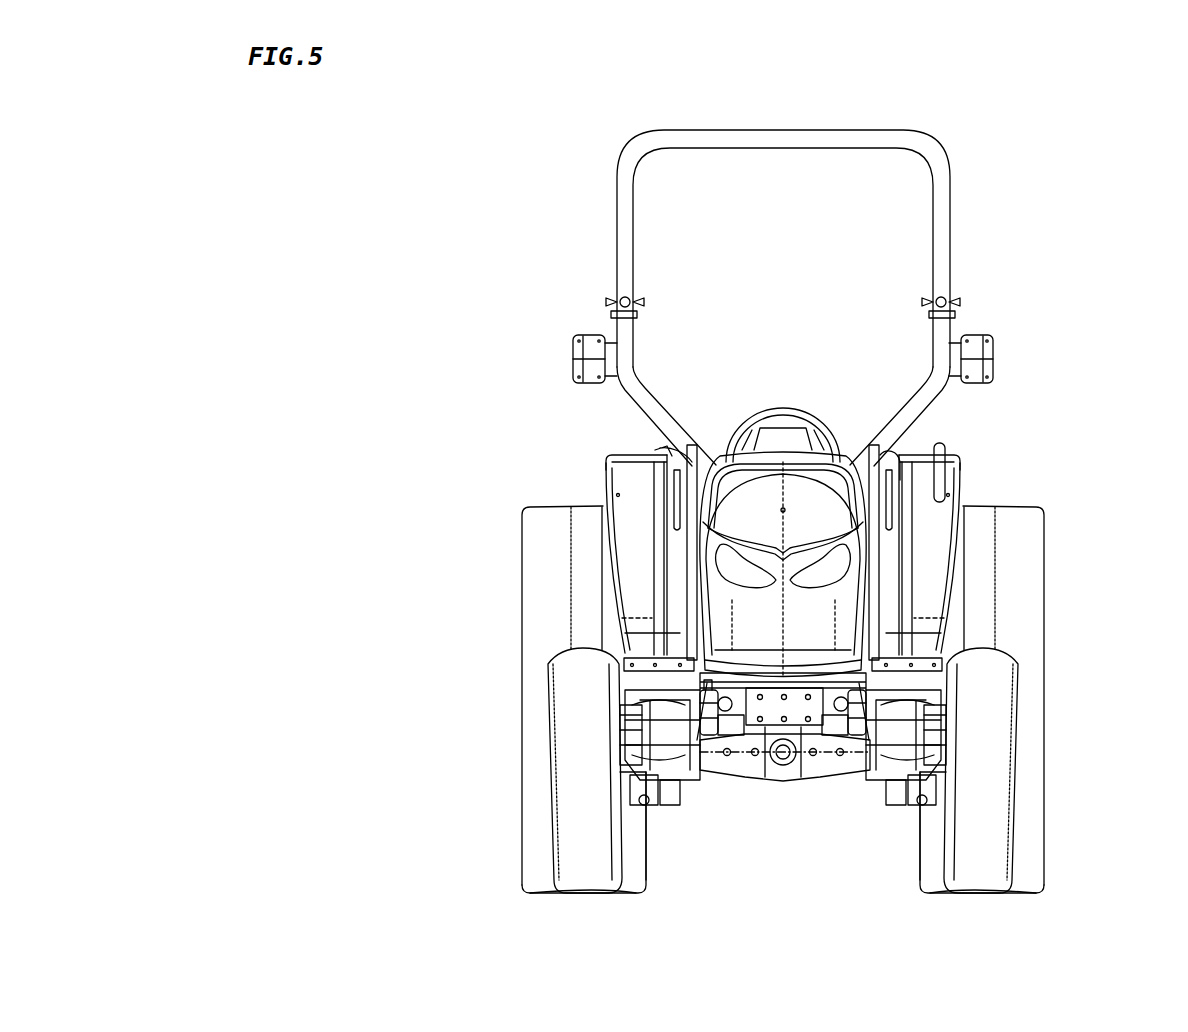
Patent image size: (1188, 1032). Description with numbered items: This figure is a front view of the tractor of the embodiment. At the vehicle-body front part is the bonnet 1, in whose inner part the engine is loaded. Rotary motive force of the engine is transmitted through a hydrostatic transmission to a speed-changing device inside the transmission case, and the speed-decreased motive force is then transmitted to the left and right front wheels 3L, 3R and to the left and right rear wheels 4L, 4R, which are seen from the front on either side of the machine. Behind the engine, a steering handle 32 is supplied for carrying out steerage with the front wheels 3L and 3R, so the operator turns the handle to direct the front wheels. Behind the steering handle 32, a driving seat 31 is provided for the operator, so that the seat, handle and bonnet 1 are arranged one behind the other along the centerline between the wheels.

The bonnet 1 is at (793, 652).
The driving seat 31 is at (727, 450).
The steering handle 32 is at (807, 414).
The right front wheel 3R is at (548, 733).
The left front wheel 3L is at (1018, 742).
The right rear wheel 4R is at (522, 587).
The left rear wheel 4L is at (1045, 527).